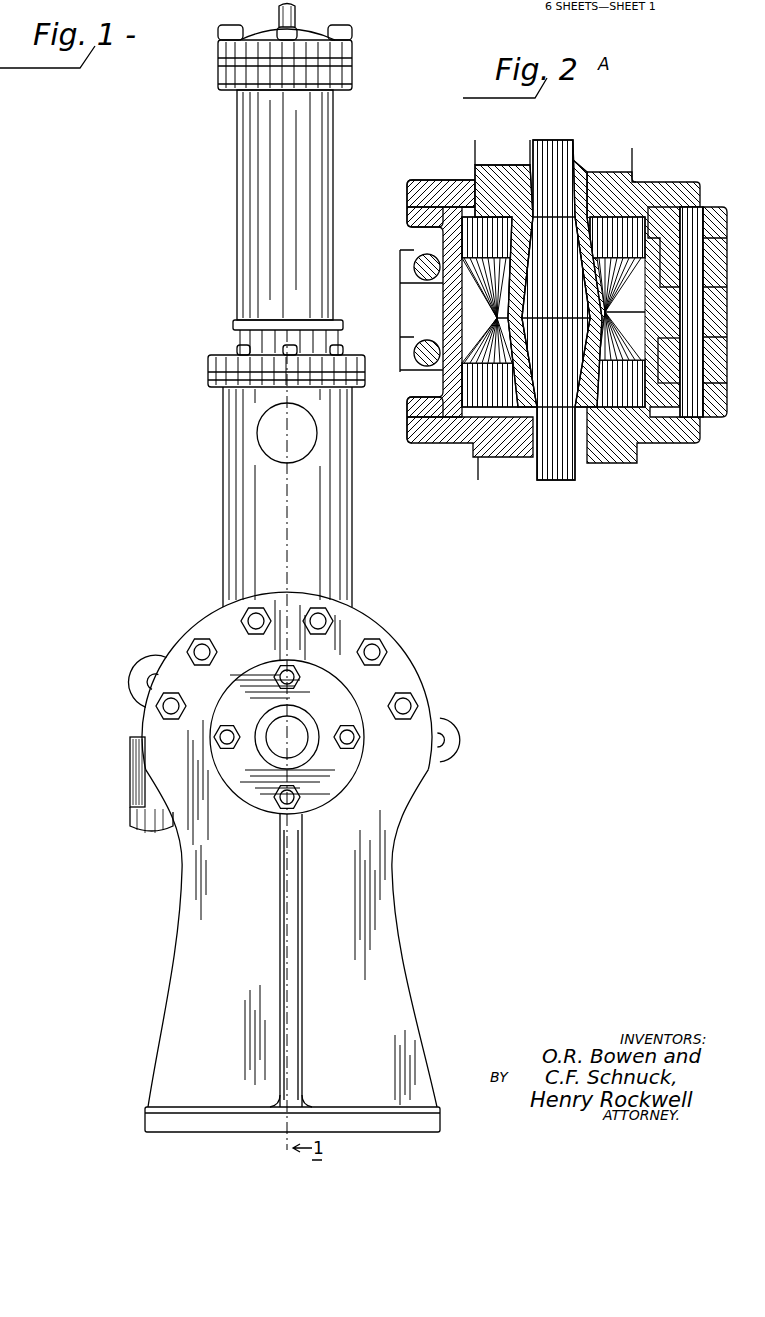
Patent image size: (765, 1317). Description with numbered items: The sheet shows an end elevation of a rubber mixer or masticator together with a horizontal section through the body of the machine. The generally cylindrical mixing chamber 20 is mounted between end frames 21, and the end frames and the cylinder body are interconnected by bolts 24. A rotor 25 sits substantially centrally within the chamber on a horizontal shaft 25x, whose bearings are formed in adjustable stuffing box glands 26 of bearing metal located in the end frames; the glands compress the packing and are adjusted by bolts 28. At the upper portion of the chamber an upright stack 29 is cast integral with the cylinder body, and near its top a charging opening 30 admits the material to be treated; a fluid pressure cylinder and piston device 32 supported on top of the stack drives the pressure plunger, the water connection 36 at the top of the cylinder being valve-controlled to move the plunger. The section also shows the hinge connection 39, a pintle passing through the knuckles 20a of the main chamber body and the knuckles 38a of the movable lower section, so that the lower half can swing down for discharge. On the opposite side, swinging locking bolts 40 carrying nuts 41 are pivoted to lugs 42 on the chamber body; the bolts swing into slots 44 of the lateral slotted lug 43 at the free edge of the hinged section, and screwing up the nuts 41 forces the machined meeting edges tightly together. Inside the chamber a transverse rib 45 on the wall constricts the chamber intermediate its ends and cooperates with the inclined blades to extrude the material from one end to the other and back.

In FIG. 2A, the mixing chamber 20 is at (483, 397).
In FIG. 2A, the knuckles of the main body portion 20a is at (726, 207).
In FIG. 1, the end frames 21 is at (291, 862).
In FIG. 1, the bolts 24 is at (163, 717).
In FIG. 2A, the rotor 25 is at (518, 240).
In FIG. 1, the horizontal shaft 25x is at (308, 727).
In FIG. 2A, the horizontal shaft 25x is at (582, 457).
In FIG. 1, the stuffing box glands 26 is at (345, 780).
In FIG. 1, the bolts 28 is at (353, 740).
In FIG. 1, the stack 29 is at (228, 524).
In FIG. 1, the charging opening 30 is at (273, 431).
In FIG. 1, the fluid pressure cylinder and piston device 32 is at (264, 205).
In FIG. 1, the water connection 36 is at (300, 12).
In FIG. 2A, the knuckles of the movable part 38a is at (663, 242).
In FIG. 1, the hinge connection 39 is at (438, 733).
In FIG. 2A, the hinge connection 39 is at (688, 419).
In FIG. 2A, the swinging locking bolts 40 is at (415, 356).
In FIG. 1, the nuts 41 is at (135, 818).
In FIG. 2A, the nuts 41 is at (413, 265).
In FIG. 1, the lugs 42 is at (143, 663).
In FIG. 1, the slotted lug 43 is at (130, 777).
In FIG. 2A, the slotted lug 43 is at (407, 305).
In FIG. 2A, the slots 44 is at (415, 252).
In FIG. 2A, the transverse rib 45 is at (458, 323).